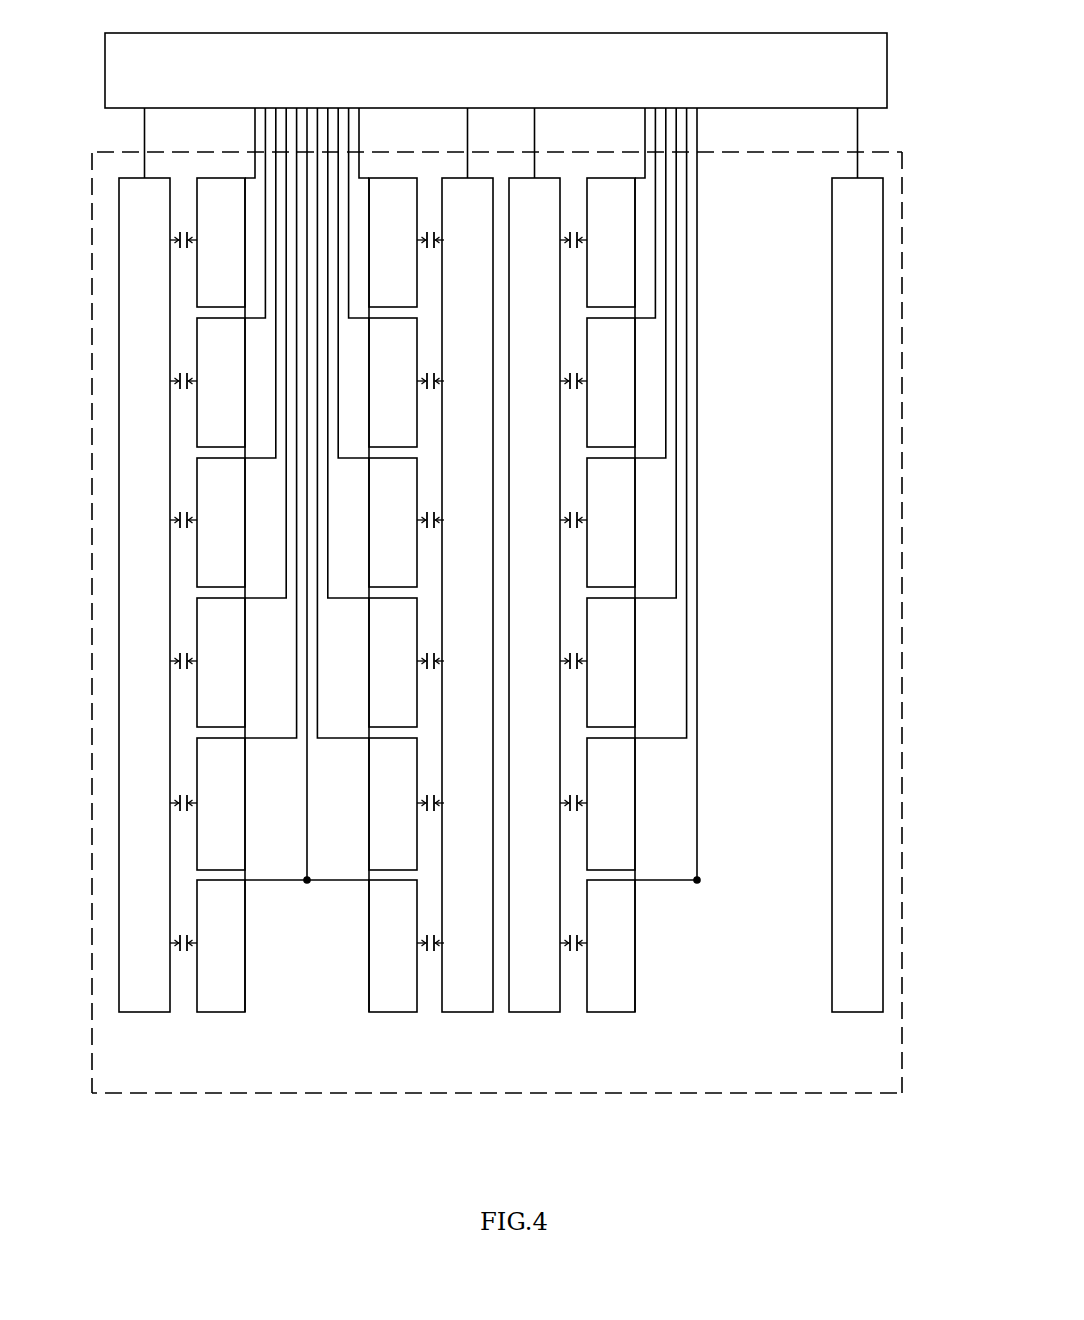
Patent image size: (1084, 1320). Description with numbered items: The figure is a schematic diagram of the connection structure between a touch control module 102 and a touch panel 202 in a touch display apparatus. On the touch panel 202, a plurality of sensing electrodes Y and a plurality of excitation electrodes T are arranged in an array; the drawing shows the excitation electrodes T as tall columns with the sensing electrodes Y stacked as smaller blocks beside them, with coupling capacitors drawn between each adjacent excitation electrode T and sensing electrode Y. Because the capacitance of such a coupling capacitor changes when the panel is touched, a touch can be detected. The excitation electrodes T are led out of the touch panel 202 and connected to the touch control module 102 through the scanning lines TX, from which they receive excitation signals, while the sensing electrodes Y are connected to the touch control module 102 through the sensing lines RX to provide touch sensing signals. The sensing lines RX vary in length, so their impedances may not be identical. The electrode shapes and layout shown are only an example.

The touch control module 102 is at (652, 60).
The touch panel 202 is at (588, 621).
The scanning lines TX is at (504, 560).
The sensing lines RX is at (588, 123).
The sensing electrodes Y is at (627, 560).
The excitation electrodes T is at (501, 593).